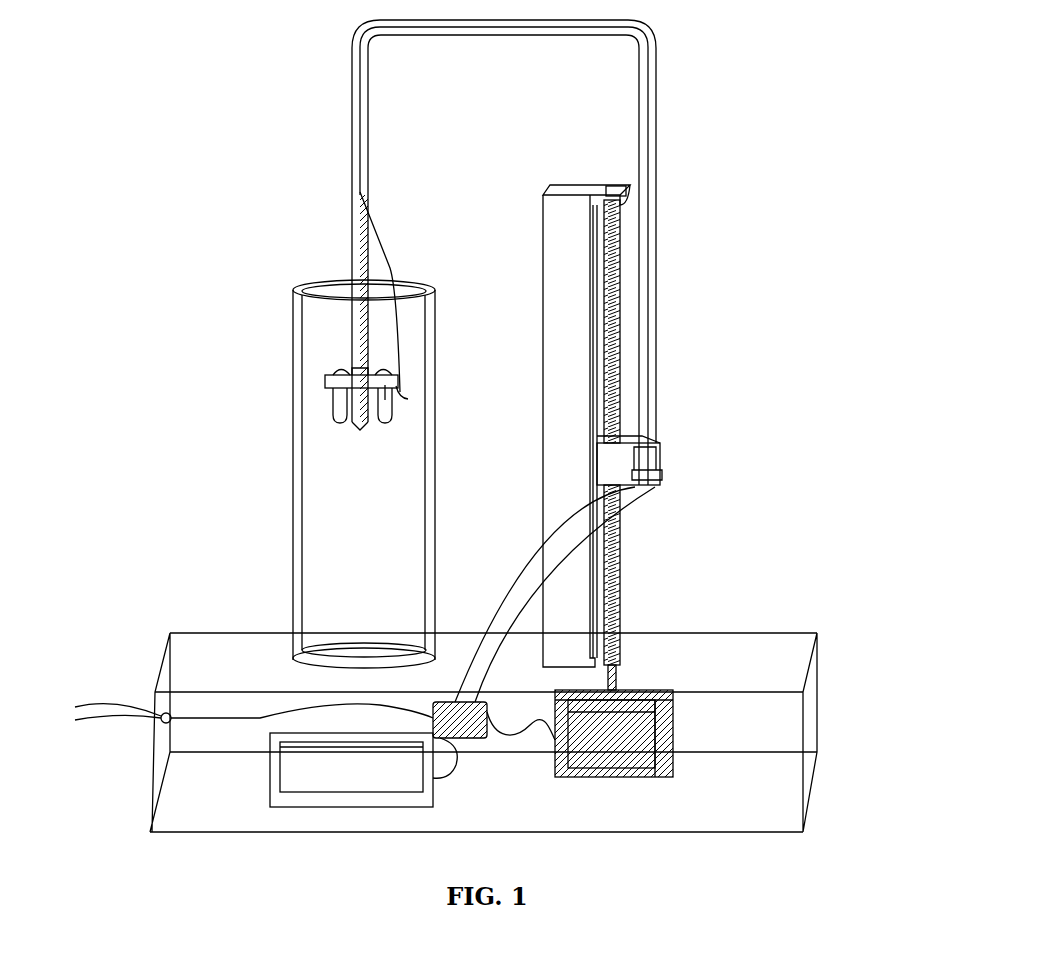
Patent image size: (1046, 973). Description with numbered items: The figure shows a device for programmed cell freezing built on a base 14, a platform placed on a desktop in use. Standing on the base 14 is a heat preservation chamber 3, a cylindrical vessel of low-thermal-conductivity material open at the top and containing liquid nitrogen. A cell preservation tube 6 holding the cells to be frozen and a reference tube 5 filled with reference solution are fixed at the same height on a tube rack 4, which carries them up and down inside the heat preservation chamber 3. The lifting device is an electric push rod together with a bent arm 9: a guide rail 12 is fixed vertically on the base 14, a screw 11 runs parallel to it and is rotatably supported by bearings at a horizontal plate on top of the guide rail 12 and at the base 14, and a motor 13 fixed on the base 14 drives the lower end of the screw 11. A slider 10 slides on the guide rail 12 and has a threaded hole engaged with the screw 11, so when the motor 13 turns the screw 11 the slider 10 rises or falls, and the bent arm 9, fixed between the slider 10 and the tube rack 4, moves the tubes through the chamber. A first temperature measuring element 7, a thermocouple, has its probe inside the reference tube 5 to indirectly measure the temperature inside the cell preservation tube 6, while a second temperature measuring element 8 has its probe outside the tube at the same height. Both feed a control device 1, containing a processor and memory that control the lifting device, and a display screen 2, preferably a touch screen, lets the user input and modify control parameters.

The control device 1 is at (487, 705).
The display screen 2 is at (305, 772).
The heat preservation chamber 3 is at (330, 578).
The tube rack 4 is at (330, 376).
The reference tube 5 is at (393, 413).
The cell preservation tube 6 is at (357, 400).
The first temperature measuring element 7 is at (382, 355).
The second temperature measuring element 8 is at (410, 390).
The bent arm 9 is at (640, 128).
The slider 10 is at (660, 440).
The screw 11 is at (618, 360).
The guide rail 12 is at (562, 268).
The motor 13 is at (673, 690).
The base 14 is at (753, 733).